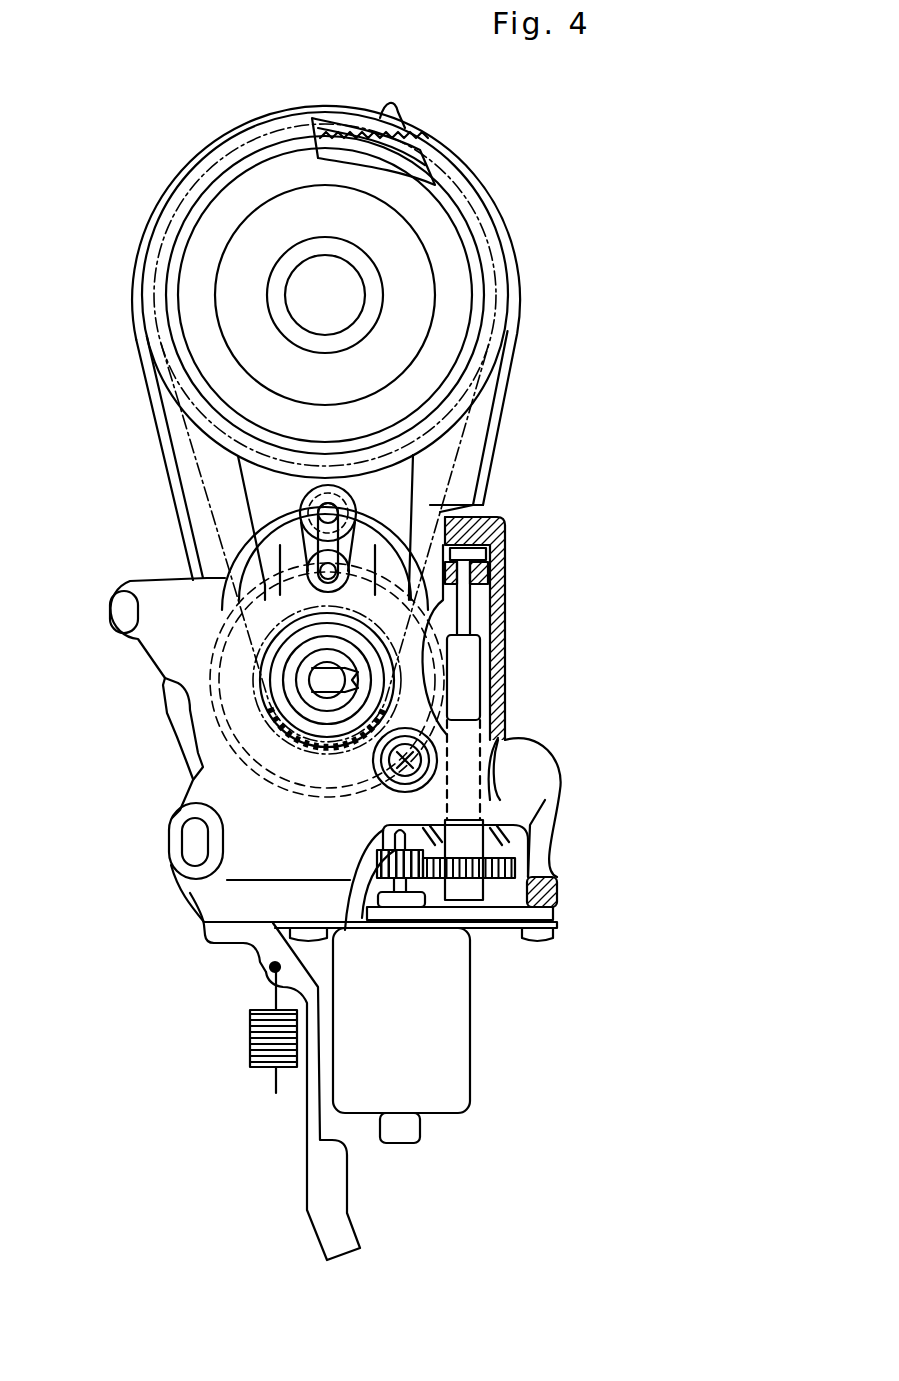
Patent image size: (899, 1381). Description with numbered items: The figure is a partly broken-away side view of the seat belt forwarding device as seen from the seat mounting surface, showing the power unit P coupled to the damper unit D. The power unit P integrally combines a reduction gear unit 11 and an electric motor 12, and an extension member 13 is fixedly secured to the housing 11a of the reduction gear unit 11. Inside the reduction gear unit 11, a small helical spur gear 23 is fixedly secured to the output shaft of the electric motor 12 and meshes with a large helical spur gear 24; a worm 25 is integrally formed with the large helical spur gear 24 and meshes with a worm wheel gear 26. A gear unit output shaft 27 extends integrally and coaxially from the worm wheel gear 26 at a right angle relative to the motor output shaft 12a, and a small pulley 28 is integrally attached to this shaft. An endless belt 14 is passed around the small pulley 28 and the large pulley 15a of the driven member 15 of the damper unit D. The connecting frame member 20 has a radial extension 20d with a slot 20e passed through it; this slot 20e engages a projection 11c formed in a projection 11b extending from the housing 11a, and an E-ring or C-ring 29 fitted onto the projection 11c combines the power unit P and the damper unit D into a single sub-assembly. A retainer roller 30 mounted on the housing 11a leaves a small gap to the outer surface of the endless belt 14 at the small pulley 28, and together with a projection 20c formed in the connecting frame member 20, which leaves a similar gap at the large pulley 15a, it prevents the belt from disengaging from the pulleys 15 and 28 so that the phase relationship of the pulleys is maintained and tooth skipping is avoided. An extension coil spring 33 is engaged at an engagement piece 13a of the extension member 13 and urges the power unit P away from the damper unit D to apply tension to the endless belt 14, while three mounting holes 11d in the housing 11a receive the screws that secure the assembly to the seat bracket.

The damper unit D is at (164, 160).
The power unit P is at (618, 813).
The reduction gear unit 11 is at (530, 678).
The housing 11a is at (195, 885).
The projection 11b is at (340, 525).
The projection 11c is at (330, 520).
The mounting holes 11d is at (122, 612).
The electric motor 12 is at (462, 1050).
The motor output shaft 12a is at (393, 836).
The extension member 13 is at (345, 1236).
The engagement piece 13a is at (262, 975).
The endless belt 14 is at (447, 505).
The driven member 15 is at (482, 249).
The large pulley 15a is at (428, 165).
The connecting frame member 20 is at (512, 368).
The projection 20c is at (362, 145).
The radial extension 20d is at (257, 503).
The slot 20e is at (327, 505).
The small helical spur gear 23 is at (365, 925).
The large helical spur gear 24 is at (517, 862).
The worm 25 is at (482, 657).
The worm wheel gear 26 is at (458, 612).
The gear unit output shaft 27 is at (312, 680).
The small pulley 28 is at (282, 732).
The E-ring or C-ring 29 is at (336, 518).
The retainer roller 30 is at (383, 770).
The extension coil spring 33 is at (250, 1045).